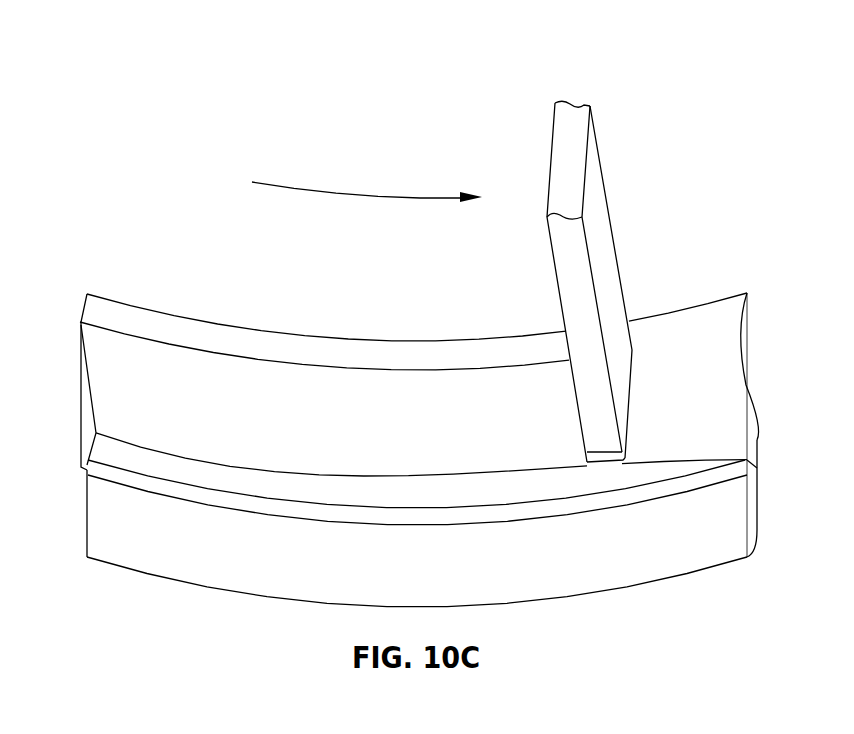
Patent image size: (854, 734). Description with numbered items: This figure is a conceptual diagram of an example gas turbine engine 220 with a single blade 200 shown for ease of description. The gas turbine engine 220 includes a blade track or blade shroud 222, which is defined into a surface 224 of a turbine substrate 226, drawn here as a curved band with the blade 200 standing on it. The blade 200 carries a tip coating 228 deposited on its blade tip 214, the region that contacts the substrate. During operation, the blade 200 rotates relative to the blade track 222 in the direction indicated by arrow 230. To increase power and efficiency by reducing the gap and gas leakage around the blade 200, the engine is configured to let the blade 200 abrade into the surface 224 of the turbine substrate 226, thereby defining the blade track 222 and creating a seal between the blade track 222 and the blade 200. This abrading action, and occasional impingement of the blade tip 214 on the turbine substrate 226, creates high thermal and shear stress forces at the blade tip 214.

The gas turbine engine 220 is at (150, 39).
The blade track 222 is at (182, 279).
The surface 224 is at (705, 320).
The turbine substrate 226 is at (97, 520).
The tip coating 228 is at (585, 462).
The blade 200 is at (640, 196).
The blade tip 214 is at (628, 412).
The arrow 230 is at (332, 196).